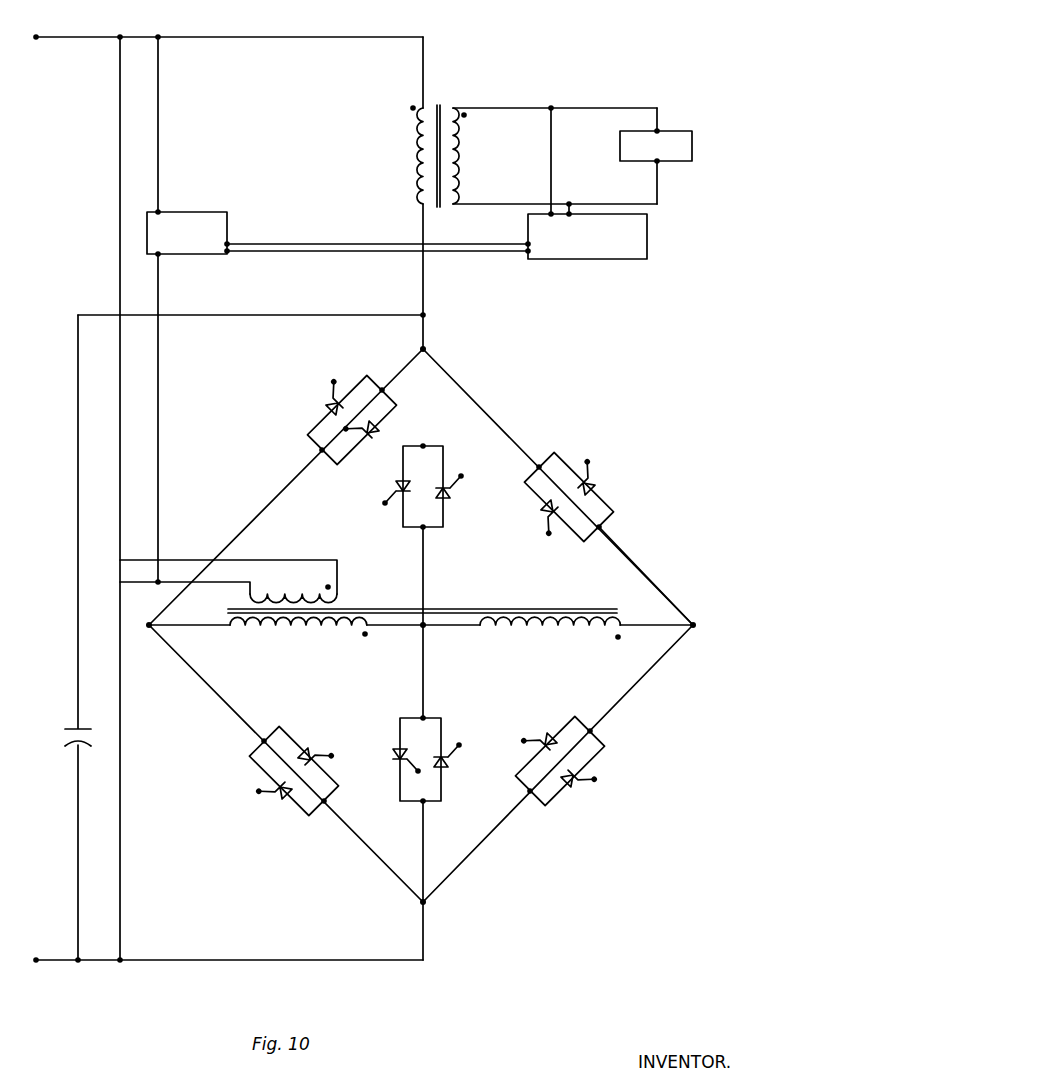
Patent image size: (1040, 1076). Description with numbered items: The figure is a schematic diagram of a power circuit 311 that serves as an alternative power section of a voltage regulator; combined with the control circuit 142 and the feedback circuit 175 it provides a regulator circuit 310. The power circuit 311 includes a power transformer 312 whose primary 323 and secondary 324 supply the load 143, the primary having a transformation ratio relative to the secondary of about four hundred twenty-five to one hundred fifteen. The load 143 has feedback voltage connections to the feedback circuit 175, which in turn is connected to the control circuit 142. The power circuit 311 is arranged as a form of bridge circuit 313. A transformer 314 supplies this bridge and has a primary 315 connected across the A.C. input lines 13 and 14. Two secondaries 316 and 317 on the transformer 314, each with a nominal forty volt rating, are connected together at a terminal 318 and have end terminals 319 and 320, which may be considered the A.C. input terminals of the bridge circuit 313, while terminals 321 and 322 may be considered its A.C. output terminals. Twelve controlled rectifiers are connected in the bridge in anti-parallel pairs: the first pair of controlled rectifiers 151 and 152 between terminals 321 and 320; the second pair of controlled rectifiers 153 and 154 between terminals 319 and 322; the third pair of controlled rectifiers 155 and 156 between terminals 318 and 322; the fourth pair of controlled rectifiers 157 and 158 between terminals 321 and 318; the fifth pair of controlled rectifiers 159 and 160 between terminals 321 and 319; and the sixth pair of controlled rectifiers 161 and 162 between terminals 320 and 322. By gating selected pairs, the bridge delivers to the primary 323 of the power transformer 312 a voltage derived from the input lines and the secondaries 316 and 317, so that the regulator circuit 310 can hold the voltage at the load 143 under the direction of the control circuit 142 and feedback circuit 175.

The A.C. input line 13 is at (147, 36).
The A.C. input line 14 is at (284, 960).
The control circuit 142 is at (227, 226).
The load 143 is at (690, 131).
The first controlled rectifier 151 is at (549, 518).
The second controlled rectifier 152 is at (591, 486).
The third controlled rectifier 153 is at (308, 752).
The fourth controlled rectifier 154 is at (280, 796).
The fifth controlled rectifier 155 is at (394, 760).
The sixth controlled rectifier 156 is at (445, 764).
The seventh controlled rectifier 157 is at (395, 490).
The eighth controlled rectifier 158 is at (445, 495).
The ninth controlled rectifier 159 is at (372, 438).
The tenth controlled rectifier 160 is at (329, 404).
The eleventh controlled rectifier 161 is at (541, 741).
The twelfth controlled rectifier 162 is at (571, 786).
The feedback circuit 175 is at (647, 238).
The regulator circuit 310 is at (43, 611).
The power circuit 311 is at (462, 389).
The power transformer 312 is at (437, 104).
The bridge circuit 313 is at (625, 556).
The transformer 314 is at (356, 608).
The primary 315 is at (262, 600).
The secondary 316 is at (331, 633).
The secondary 317 is at (590, 630).
The terminal 318 is at (426, 630).
The end terminal 319 is at (149, 628).
The end terminal 320 is at (697, 622).
The terminal 321 is at (426, 347).
The terminal 322 is at (425, 905).
The primary 323 is at (415, 160).
The secondary 324 is at (455, 160).